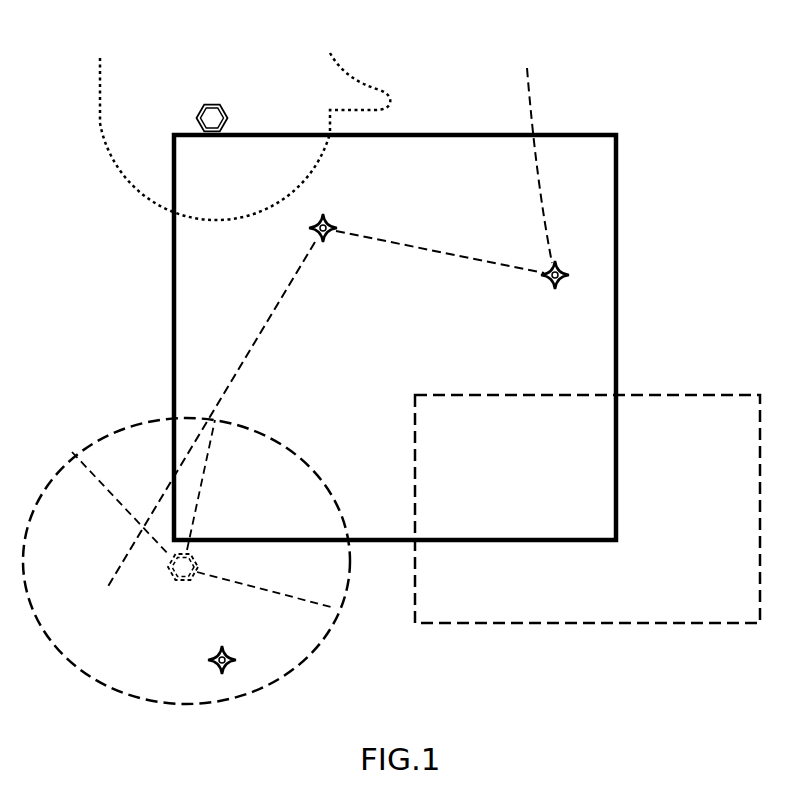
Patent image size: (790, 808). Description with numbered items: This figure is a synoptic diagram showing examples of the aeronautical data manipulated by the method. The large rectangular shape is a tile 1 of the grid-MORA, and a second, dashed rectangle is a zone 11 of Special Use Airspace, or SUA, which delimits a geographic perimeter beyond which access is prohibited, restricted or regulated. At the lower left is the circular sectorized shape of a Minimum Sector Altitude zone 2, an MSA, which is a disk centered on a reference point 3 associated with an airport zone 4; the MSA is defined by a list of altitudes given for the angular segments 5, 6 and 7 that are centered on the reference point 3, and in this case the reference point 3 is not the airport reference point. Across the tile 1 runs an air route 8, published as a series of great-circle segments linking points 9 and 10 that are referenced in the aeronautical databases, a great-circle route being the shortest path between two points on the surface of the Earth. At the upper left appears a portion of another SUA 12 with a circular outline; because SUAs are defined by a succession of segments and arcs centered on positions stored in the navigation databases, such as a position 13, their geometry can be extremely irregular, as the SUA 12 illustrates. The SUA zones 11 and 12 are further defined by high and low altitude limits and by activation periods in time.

The tile of the grid-MORA 1 is at (617, 190).
The Minimum Sector Altitude zone 2 is at (52, 485).
The reference point 3 is at (175, 579).
The airport zone 4 is at (231, 656).
The angular segment 5 is at (145, 464).
The angular segment 6 is at (276, 527).
The angular segment 7 is at (136, 667).
The air route 8 is at (423, 248).
The point 9 is at (557, 287).
The point 10 is at (331, 219).
The Special Use Airspace zone 11 is at (687, 395).
The Special Use Airspace 12 is at (100, 123).
The position 13 is at (228, 118).